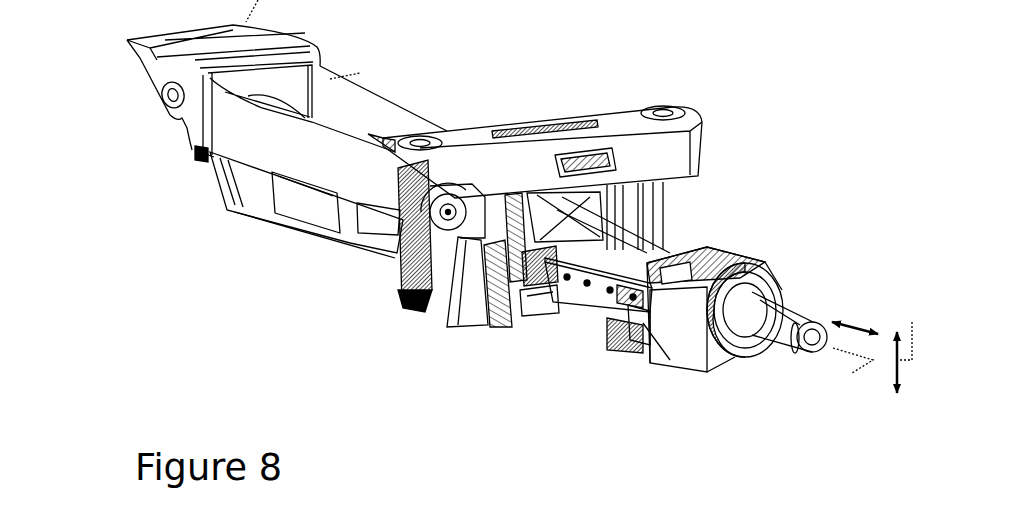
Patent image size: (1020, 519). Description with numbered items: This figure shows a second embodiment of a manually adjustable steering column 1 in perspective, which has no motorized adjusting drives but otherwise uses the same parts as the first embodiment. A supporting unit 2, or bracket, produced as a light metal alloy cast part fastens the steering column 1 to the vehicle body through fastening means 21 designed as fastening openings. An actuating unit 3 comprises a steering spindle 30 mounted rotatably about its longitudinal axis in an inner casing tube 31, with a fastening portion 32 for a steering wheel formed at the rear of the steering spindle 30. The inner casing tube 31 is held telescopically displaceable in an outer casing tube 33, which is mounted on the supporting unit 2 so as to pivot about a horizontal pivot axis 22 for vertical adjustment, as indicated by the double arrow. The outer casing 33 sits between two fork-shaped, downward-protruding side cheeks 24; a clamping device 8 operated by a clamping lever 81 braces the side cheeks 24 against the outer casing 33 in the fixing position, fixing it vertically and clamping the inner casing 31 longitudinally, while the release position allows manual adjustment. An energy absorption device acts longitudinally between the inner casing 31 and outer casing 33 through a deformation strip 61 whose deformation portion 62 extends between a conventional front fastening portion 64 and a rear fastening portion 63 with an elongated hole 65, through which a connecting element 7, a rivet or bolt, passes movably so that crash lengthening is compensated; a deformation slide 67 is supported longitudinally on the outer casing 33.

The steering column 1 is at (763, 71).
The supporting unit 2 is at (613, 122).
The actuating unit 3 is at (770, 236).
The connecting element 7 is at (697, 360).
The clamping device 8 is at (444, 325).
The fastening means 21 is at (430, 132).
The horizontal pivot axis 22 is at (197, 93).
The side cheeks 24 is at (668, 208).
The steering spindle 30 is at (745, 300).
The inner casing tube 31 is at (655, 250).
The fastening portion 32 is at (772, 325).
The outer casing tube 33 is at (292, 200).
The deformation strip 61 is at (578, 262).
The deformation portion 62 is at (598, 310).
The fastening portion 63 is at (643, 327).
The fastening portion 64 is at (372, 262).
The elongated hole 65 is at (633, 357).
The deformation slide 67 is at (550, 323).
The clamping lever 81 is at (462, 322).